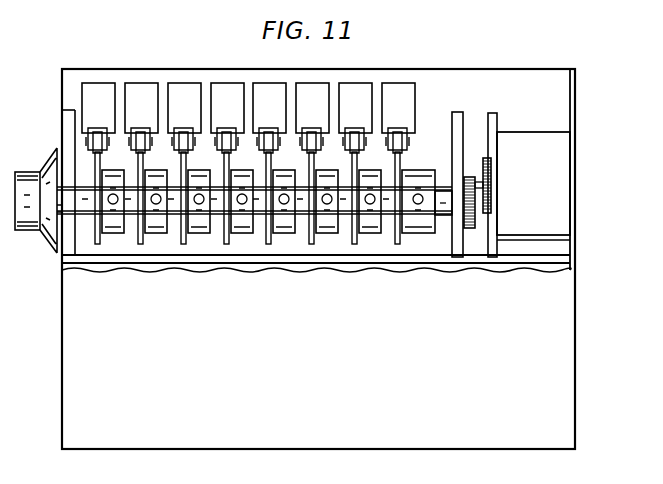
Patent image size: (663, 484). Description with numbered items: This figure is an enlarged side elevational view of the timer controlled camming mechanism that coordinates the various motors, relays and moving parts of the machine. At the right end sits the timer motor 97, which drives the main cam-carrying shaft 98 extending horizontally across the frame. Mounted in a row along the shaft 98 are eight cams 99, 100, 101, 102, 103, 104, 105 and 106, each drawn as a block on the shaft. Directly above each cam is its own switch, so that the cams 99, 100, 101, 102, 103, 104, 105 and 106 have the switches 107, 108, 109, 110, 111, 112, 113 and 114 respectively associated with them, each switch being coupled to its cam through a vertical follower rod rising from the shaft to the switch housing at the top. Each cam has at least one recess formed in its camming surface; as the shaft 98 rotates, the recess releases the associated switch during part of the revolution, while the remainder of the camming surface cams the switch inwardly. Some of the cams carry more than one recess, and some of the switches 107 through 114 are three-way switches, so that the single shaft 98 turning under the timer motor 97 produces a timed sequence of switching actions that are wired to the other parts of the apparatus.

The timer motor 97 is at (548, 204).
The main cam-carrying shaft 98 is at (446, 191).
The cam 99 is at (398, 244).
The cam 100 is at (355, 244).
The cam 101 is at (312, 244).
The cam 102 is at (269, 244).
The cam 103 is at (227, 244).
The cam 104 is at (184, 244).
The cam 105 is at (141, 244).
The cam 106 is at (98, 244).
The switch 107 is at (410, 116).
The switch 108 is at (367, 116).
The switch 109 is at (324, 116).
The switch 110 is at (281, 116).
The switch 111 is at (239, 116).
The switch 112 is at (196, 116).
The switch 113 is at (153, 116).
The switch 114 is at (110, 116).